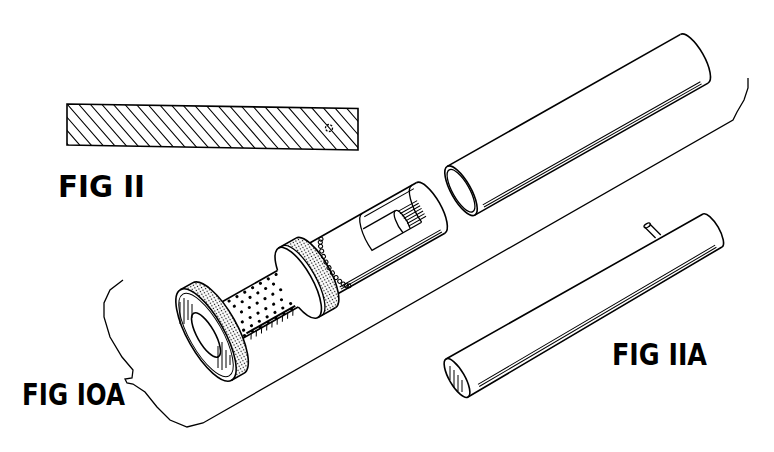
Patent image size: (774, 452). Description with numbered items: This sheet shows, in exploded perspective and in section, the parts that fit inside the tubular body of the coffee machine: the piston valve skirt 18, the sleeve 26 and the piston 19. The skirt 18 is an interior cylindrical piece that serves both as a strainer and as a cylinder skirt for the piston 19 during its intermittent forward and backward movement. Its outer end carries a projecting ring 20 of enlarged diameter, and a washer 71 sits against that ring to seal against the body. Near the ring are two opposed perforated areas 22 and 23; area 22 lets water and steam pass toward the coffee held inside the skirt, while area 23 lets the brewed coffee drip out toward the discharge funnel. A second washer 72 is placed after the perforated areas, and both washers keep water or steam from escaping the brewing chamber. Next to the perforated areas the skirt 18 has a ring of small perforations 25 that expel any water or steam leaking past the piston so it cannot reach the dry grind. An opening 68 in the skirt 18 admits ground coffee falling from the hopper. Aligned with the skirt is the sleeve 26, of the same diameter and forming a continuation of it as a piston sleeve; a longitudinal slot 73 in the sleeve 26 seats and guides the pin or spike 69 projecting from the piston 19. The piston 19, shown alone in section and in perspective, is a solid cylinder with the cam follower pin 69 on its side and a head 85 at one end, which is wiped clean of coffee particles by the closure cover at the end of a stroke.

In FIG. 10A, the piston valve skirt 18 is at (432, 233).
In FIG. 11, the piston 19 is at (221, 124).
In FIG. 11A, the piston 19 is at (543, 343).
In FIG. 10A, the projecting ring 20 is at (187, 303).
In FIG. 10A, the perforated area 22 is at (257, 284).
In FIG. 10A, the perforated area 23 is at (287, 325).
In FIG. 10A, the small perforations 25 is at (330, 241).
In FIG. 10A, the sleeve 26 is at (593, 135).
In FIG. 10A, the opening 68 is at (384, 212).
In FIG. 11, the pin or spike 69 is at (329, 123).
In FIG. 11A, the pin or spike 69 is at (646, 229).
In FIG. 10A, the washer 71 is at (208, 285).
In FIG. 10A, the washer 72 is at (295, 244).
In FIG. 10A, the longitudinal slot 73 is at (449, 178).
In FIG. 11A, the piston head 85 is at (455, 383).